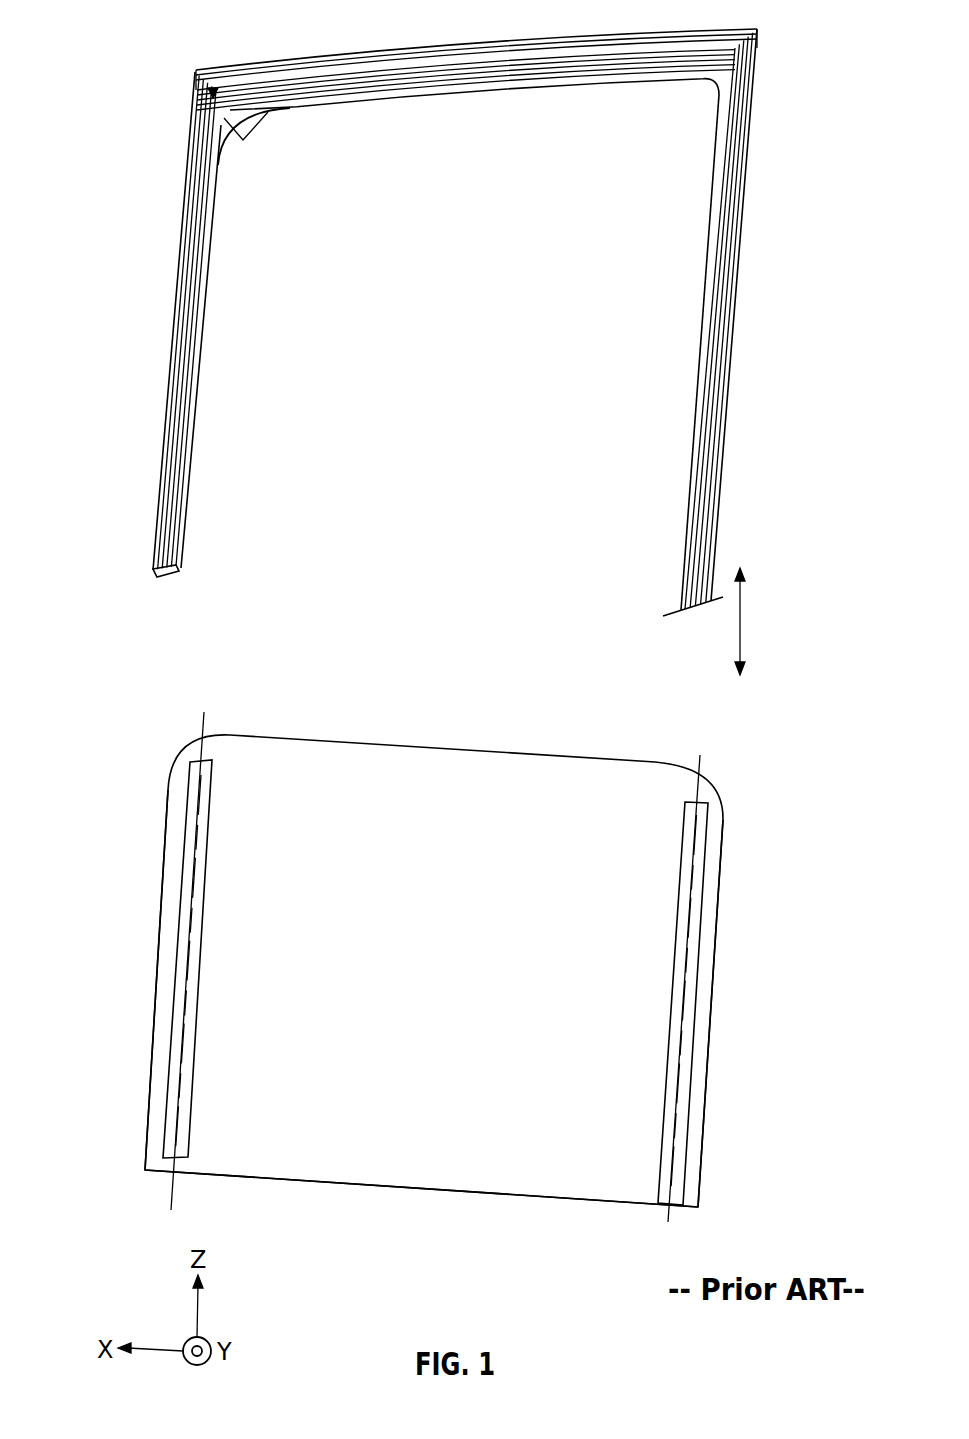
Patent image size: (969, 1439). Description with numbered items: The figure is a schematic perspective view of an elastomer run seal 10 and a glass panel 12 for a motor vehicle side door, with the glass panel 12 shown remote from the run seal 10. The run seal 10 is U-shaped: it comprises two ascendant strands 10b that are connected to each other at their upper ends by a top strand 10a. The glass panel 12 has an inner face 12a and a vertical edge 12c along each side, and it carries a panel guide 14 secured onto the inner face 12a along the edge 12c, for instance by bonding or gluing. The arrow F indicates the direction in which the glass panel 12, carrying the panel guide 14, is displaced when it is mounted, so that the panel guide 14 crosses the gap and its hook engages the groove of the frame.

The elastomer run seal 10 is at (752, 259).
The top strand 10a is at (250, 56).
The ascendant strands 10b is at (166, 378).
The glass panel 12 is at (749, 891).
The inner face 12a is at (452, 1138).
The vertical edge 12c is at (155, 1018).
The panel guide 14 is at (201, 1002).
The arrow F is at (740, 620).